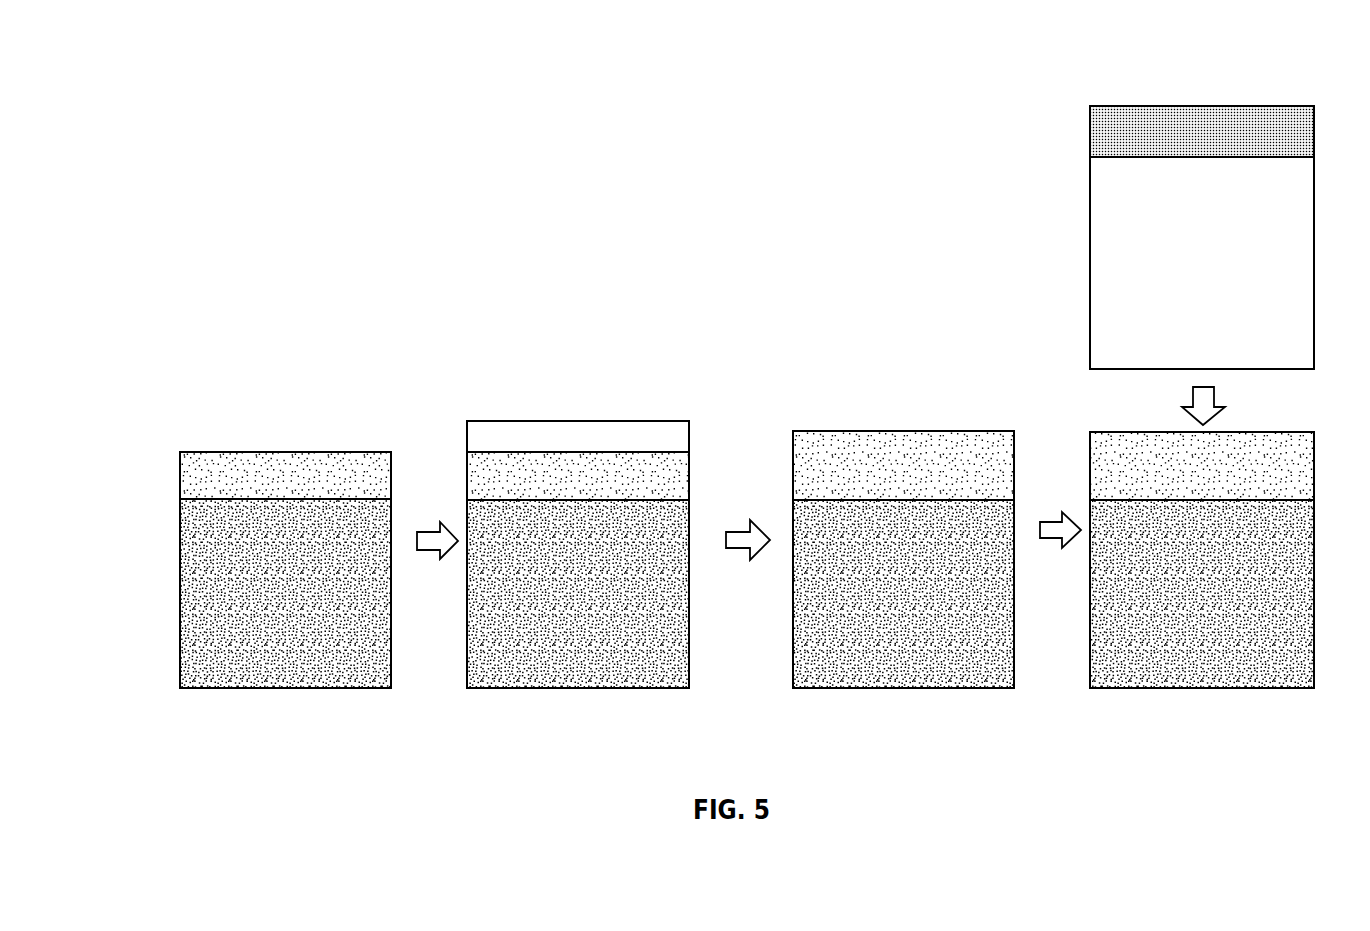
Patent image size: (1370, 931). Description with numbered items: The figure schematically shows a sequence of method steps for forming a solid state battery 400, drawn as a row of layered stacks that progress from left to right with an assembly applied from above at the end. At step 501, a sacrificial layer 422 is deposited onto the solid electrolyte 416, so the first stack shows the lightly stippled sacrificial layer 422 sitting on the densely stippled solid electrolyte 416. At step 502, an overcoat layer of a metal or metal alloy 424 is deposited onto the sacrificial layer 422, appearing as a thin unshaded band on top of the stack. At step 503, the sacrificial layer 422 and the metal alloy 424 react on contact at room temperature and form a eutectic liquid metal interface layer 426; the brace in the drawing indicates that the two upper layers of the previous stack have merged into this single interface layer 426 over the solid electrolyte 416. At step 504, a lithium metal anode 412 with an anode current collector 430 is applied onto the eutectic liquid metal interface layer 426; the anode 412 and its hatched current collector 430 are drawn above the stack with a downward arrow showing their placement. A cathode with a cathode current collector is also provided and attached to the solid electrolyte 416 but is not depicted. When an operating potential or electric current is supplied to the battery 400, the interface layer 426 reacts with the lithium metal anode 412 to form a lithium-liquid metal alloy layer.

The solid state battery 400 is at (996, 63).
The lithium metal anode 412 is at (1100, 287).
The solid electrolyte 416 is at (190, 606).
The sacrificial layer 422 is at (190, 482).
The overcoat layer of a metal or metal alloy 424 is at (573, 431).
The eutectic liquid metal interface layer 426 is at (805, 462).
The anode current collector 430 is at (1100, 137).
The step 501 is at (285, 700).
The step 502 is at (570, 700).
The step 503 is at (911, 700).
The step 504 is at (1201, 699).